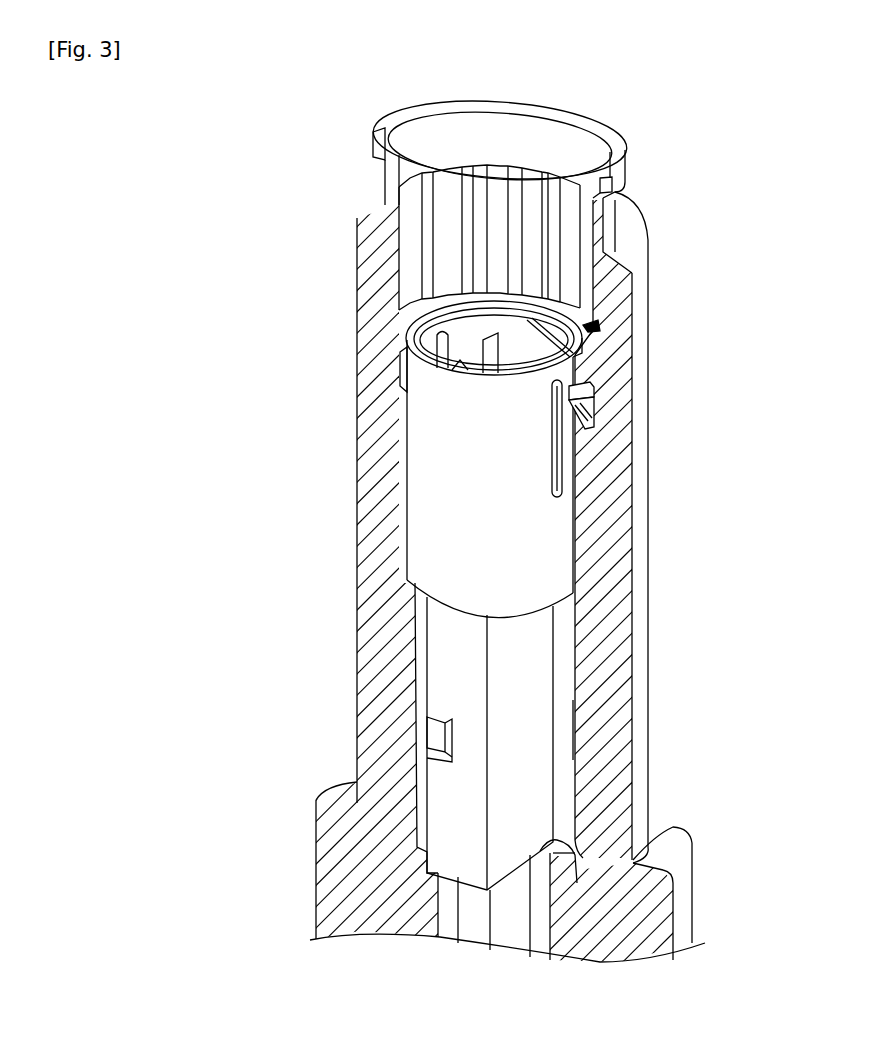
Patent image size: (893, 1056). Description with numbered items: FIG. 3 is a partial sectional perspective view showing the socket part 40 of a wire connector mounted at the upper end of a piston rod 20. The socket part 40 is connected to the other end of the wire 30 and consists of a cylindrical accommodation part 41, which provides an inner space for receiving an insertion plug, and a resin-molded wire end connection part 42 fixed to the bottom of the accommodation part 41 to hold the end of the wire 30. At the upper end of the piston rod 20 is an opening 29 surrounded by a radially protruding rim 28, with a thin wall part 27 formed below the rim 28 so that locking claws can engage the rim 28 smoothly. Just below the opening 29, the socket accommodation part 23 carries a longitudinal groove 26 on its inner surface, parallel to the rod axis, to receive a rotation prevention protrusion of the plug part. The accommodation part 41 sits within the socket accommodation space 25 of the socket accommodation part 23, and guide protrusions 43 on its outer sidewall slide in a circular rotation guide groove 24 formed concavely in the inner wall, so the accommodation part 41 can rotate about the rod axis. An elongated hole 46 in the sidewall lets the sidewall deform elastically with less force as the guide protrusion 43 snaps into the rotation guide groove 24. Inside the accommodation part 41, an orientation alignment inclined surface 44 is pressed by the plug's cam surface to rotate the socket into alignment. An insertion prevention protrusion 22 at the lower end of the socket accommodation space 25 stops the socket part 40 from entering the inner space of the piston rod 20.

The piston rod 20 is at (663, 906).
The insertion prevention protrusion 22 is at (563, 850).
The socket accommodation part 23 is at (625, 650).
The rotation guide groove 24 is at (594, 418).
The socket accommodation space 25 is at (565, 745).
The longitudinal groove 26 is at (535, 187).
The thin wall part 27 is at (598, 232).
The rim 28 is at (613, 190).
The opening 29 is at (447, 140).
The wire 30 is at (474, 925).
The socket part 40 is at (625, 322).
The accommodation part 41 is at (425, 482).
The wire end connection part 42 is at (443, 657).
The guide protrusion 43 is at (594, 394).
The orientation alignment inclined surface 44 is at (600, 324).
The elongated hole 46 is at (573, 458).